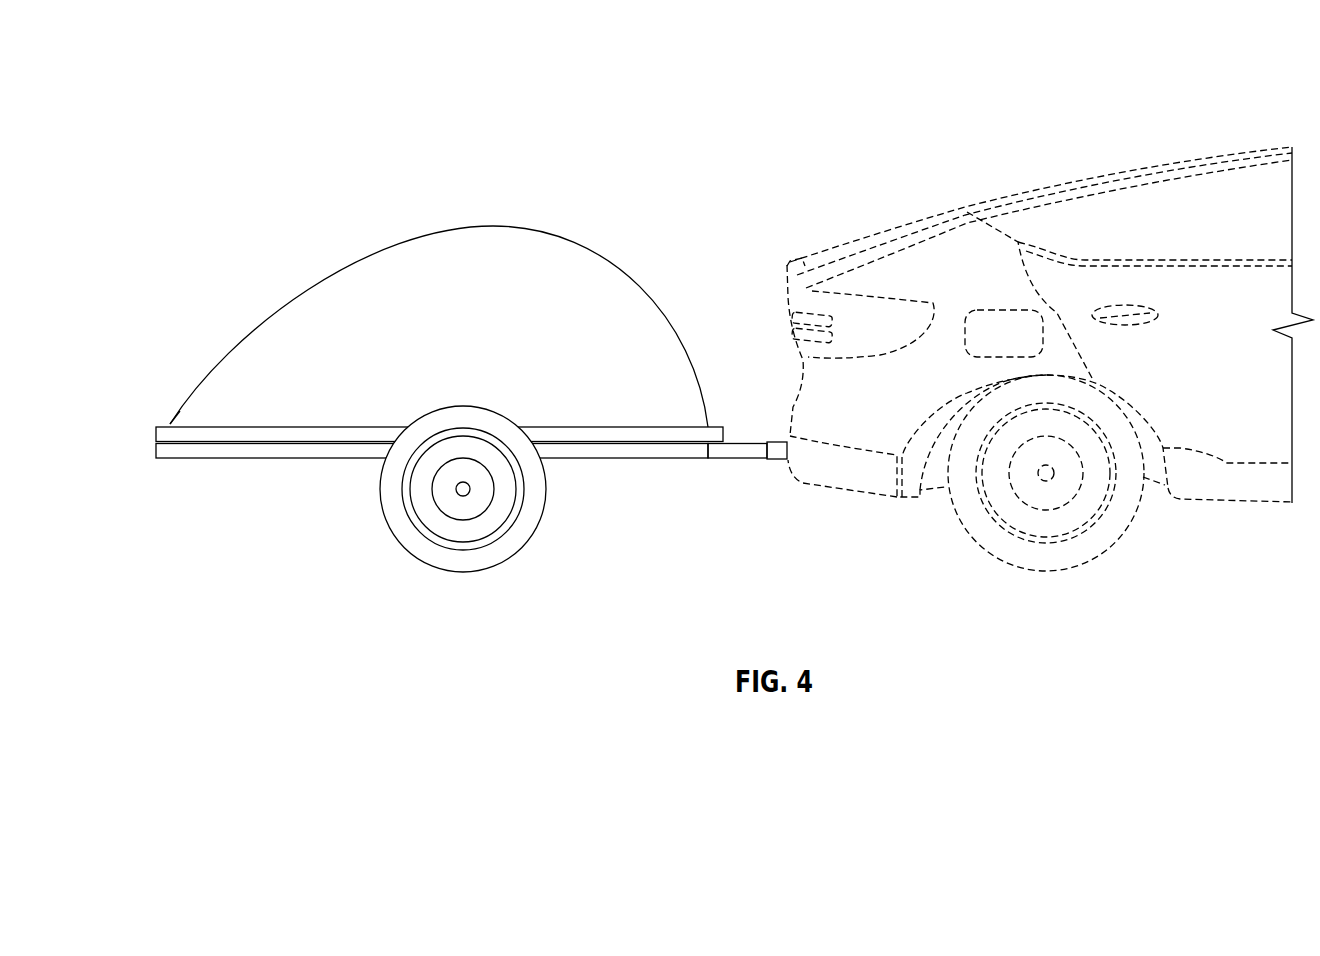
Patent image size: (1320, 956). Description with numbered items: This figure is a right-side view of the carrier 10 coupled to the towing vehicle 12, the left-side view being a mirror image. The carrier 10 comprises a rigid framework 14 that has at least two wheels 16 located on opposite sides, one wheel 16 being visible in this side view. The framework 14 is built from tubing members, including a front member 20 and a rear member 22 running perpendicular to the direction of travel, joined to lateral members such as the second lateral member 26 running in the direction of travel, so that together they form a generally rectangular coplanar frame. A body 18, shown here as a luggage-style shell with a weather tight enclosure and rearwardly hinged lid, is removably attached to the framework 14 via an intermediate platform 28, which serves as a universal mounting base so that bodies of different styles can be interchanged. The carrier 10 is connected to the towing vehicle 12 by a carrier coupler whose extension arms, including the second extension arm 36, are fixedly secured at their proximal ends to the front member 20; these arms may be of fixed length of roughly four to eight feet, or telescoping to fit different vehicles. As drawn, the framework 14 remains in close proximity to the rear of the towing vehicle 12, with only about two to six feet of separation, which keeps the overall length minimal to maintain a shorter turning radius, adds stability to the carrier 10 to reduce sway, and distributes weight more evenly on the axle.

The carrier 10 is at (155, 108).
The towing vehicle 12 is at (785, 108).
The rigid framework 14 is at (406, 473).
The wheels 16 is at (415, 557).
The body 18 is at (300, 290).
The front member 20 is at (715, 450).
The rear member 22 is at (170, 423).
The second lateral member 26 is at (156, 450).
The platform 28 is at (156, 432).
The second extension arm 36 is at (740, 452).